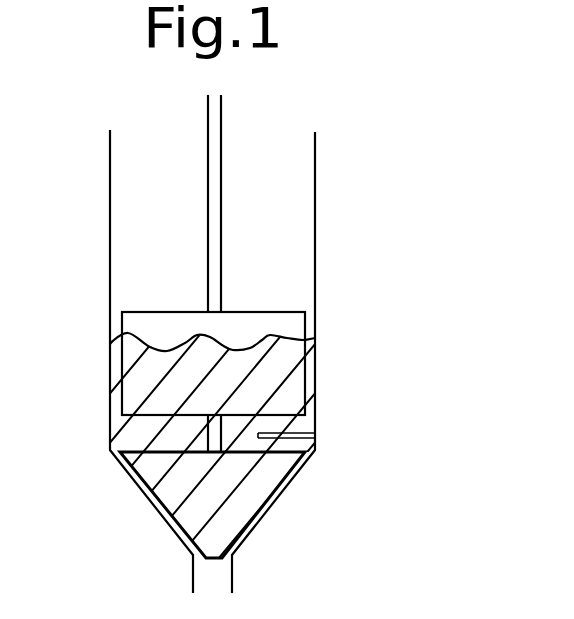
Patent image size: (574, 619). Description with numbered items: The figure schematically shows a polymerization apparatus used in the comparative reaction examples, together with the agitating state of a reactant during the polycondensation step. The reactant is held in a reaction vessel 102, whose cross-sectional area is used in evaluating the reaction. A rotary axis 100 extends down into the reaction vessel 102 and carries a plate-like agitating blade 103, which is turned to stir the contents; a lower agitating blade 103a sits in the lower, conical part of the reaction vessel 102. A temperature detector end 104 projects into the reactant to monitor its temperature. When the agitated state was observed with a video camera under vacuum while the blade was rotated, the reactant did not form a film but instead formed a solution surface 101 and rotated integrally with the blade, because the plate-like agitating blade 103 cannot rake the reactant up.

The rotary axis 100 is at (216, 158).
The solution surface of a reactant during stirring 101 is at (237, 348).
The reaction vessel 102 is at (312, 212).
The agitating blade 103 is at (297, 382).
The lower agitating blade 103a is at (255, 492).
The temperature detector end 104 is at (315, 432).